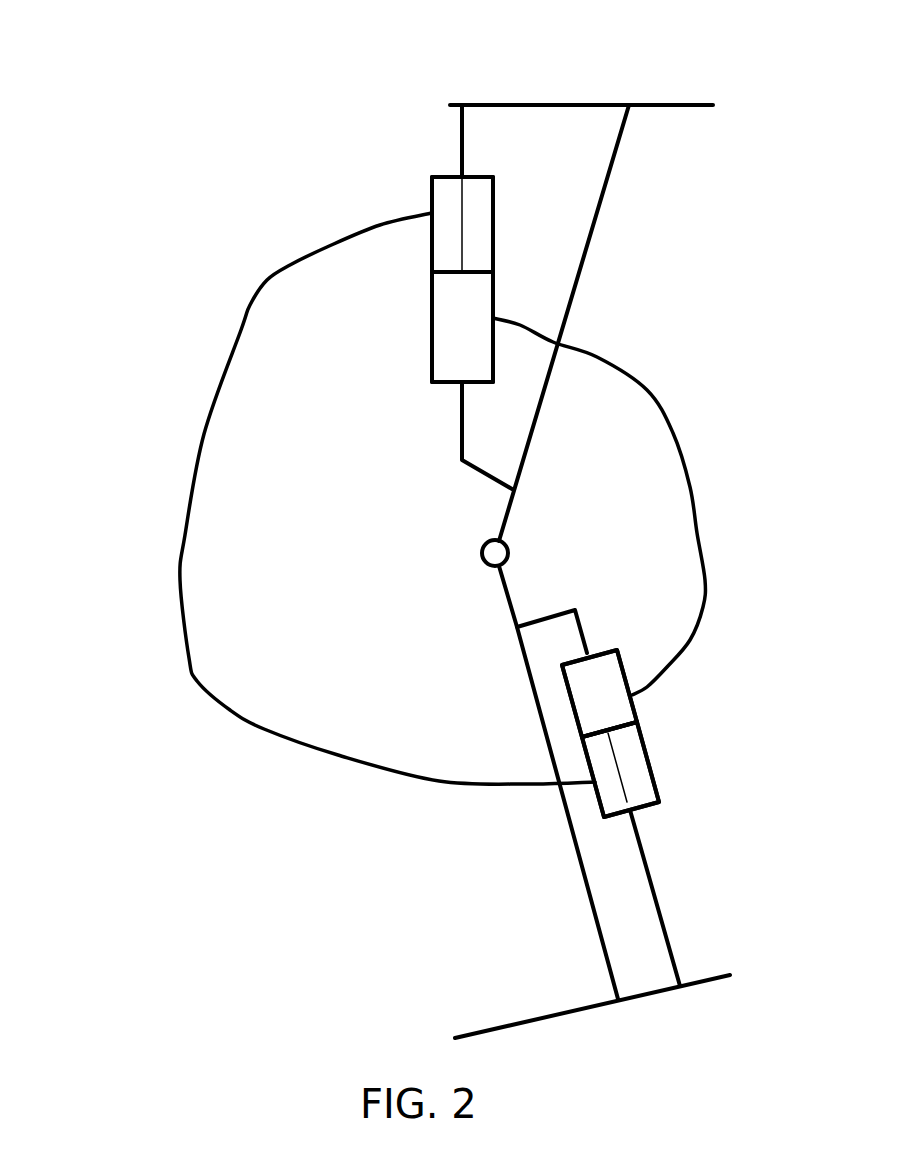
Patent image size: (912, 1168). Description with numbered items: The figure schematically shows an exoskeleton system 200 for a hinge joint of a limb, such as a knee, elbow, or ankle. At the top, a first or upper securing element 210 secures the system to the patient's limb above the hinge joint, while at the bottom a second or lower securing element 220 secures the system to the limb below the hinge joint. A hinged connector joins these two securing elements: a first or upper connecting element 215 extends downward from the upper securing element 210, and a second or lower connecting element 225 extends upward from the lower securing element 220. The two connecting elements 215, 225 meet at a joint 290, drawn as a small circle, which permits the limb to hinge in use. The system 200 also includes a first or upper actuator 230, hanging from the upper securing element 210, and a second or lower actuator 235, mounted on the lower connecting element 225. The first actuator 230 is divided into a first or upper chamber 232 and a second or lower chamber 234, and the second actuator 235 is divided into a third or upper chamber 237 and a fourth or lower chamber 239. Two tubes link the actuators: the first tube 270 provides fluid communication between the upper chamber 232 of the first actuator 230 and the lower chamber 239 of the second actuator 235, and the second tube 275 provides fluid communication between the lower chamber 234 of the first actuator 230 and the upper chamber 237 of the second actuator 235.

The exoskeleton system 200 is at (197, 58).
The first securing element 210 is at (540, 102).
The first connecting element 215 is at (597, 233).
The second securing element 220 is at (550, 1015).
The second connecting element 225 is at (580, 860).
The first actuator 230 is at (432, 273).
The first chamber 232 is at (443, 210).
The second chamber 234 is at (462, 327).
The second actuator 235 is at (643, 733).
The third chamber 237 is at (599, 693).
The fourth chamber 239 is at (638, 773).
The first tube 270 is at (193, 462).
The second tube 275 is at (697, 518).
The joint 290 is at (482, 552).